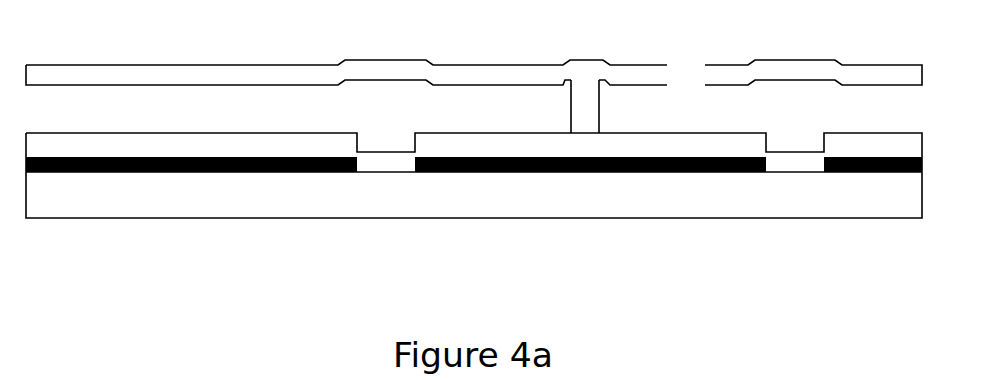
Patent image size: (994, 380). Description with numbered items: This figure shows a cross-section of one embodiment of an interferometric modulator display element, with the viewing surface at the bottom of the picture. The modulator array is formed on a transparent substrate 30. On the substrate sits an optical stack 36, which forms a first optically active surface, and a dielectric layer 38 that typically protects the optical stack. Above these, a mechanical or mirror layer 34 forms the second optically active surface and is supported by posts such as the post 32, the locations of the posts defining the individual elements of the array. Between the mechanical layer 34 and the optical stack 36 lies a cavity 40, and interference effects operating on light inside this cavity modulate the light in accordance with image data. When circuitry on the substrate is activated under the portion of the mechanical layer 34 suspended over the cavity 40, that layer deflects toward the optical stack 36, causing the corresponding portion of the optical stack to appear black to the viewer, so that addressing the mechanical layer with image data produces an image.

The transparent substrate 30 is at (612, 219).
The post 32 is at (583, 60).
The mechanical layer 34 is at (378, 60).
The optical stack 36 is at (482, 172).
The dielectric layer 38 is at (348, 133).
The cavity 40 is at (400, 106).